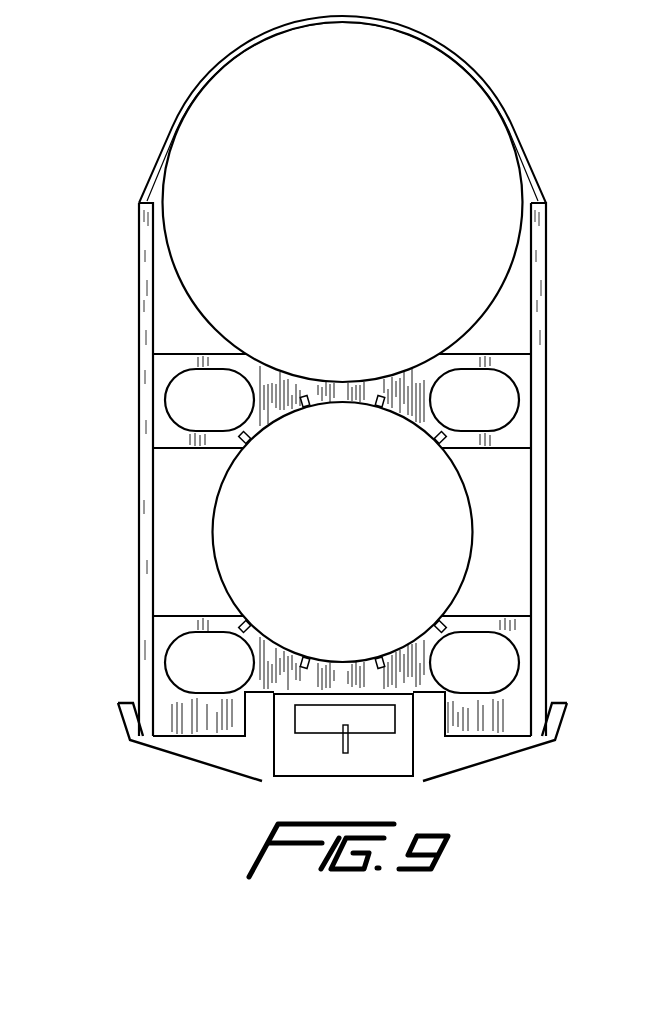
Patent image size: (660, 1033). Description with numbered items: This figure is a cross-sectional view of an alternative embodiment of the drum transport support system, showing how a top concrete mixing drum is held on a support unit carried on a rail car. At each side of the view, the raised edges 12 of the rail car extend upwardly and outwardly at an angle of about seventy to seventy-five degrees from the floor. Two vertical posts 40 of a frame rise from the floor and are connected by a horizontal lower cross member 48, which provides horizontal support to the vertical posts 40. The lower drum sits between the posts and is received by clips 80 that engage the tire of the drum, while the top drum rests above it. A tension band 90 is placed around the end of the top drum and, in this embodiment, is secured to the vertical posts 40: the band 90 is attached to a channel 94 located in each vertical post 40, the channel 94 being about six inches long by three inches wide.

The raised edges 12 is at (571, 704).
The vertical posts 40 is at (535, 400).
The horizontal lower cross member 48 is at (522, 620).
The clips 80 is at (250, 441).
The tension band 90 is at (149, 175).
The channel 94 is at (538, 232).